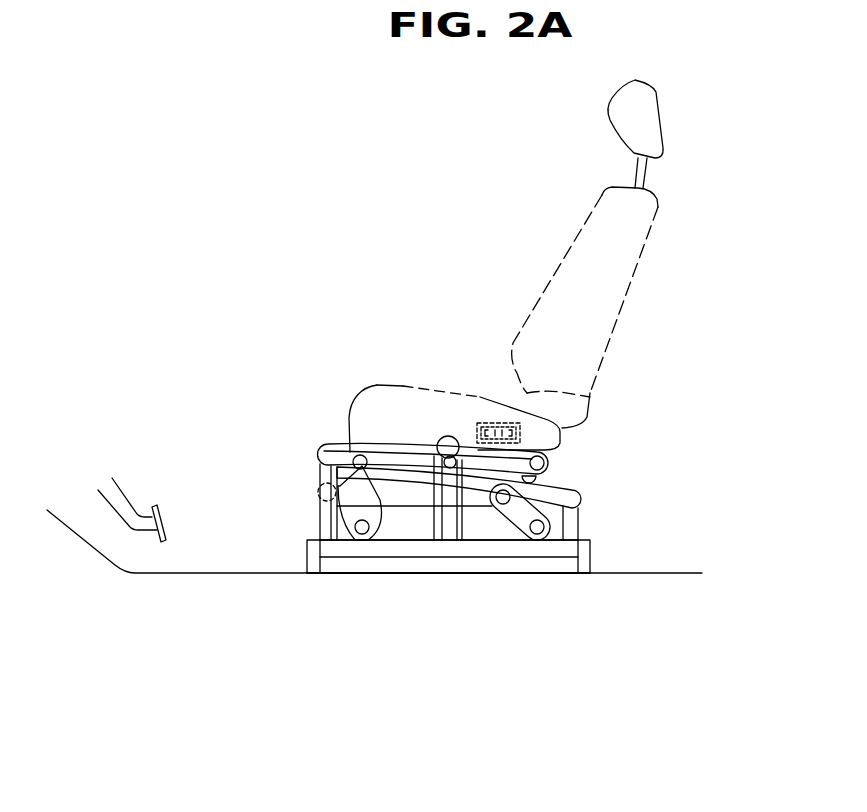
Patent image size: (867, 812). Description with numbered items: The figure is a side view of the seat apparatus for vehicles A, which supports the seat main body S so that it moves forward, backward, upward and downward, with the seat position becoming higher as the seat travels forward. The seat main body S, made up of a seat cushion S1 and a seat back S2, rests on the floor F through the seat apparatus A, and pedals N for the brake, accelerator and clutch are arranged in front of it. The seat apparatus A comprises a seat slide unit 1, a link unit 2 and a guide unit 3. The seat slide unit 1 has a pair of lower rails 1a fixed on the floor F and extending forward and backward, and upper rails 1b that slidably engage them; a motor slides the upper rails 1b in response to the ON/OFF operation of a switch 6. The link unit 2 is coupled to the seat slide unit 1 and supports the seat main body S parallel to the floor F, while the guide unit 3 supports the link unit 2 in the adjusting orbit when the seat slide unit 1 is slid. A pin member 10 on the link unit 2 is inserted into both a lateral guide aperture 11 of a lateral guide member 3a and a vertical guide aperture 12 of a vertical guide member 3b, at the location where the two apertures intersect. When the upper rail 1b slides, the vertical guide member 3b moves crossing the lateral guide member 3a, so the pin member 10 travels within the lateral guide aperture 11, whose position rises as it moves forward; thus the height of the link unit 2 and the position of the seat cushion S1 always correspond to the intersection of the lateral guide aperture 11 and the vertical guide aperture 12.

The seat slide unit 1 is at (394, 638).
The lower rail 1a is at (388, 566).
The upper rail 1b is at (370, 552).
The link unit 2 is at (556, 461).
The guide unit 3 is at (452, 467).
The lateral guide member 3a is at (338, 442).
The vertical guide member 3b is at (485, 523).
The switch 6 is at (510, 421).
The pin member 10 is at (447, 436).
The lateral guide aperture 11 is at (565, 477).
The vertical guide aperture 12 is at (450, 527).
The seat main body S is at (552, 266).
The seat cushion S1 is at (377, 385).
The seat back S2 is at (633, 278).
The pedals N is at (168, 524).
The floor F is at (653, 572).
The seat apparatus for vehicles A is at (321, 615).